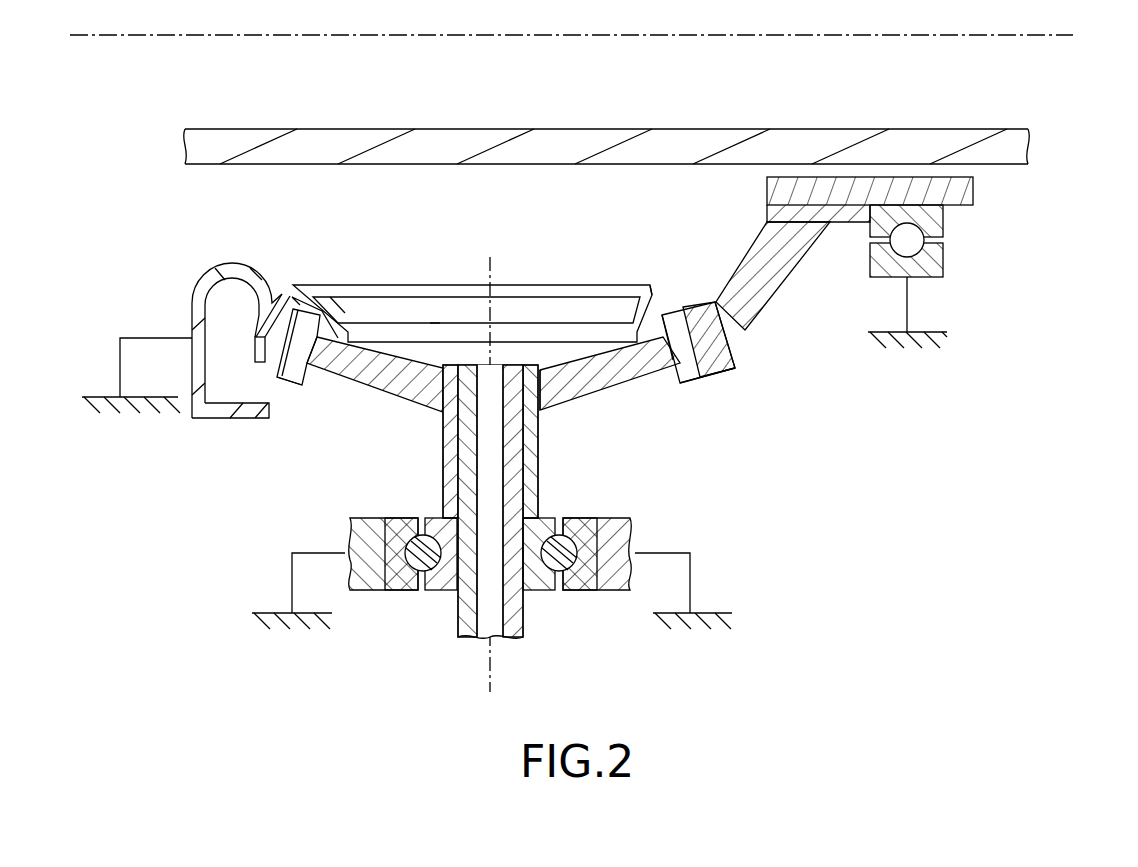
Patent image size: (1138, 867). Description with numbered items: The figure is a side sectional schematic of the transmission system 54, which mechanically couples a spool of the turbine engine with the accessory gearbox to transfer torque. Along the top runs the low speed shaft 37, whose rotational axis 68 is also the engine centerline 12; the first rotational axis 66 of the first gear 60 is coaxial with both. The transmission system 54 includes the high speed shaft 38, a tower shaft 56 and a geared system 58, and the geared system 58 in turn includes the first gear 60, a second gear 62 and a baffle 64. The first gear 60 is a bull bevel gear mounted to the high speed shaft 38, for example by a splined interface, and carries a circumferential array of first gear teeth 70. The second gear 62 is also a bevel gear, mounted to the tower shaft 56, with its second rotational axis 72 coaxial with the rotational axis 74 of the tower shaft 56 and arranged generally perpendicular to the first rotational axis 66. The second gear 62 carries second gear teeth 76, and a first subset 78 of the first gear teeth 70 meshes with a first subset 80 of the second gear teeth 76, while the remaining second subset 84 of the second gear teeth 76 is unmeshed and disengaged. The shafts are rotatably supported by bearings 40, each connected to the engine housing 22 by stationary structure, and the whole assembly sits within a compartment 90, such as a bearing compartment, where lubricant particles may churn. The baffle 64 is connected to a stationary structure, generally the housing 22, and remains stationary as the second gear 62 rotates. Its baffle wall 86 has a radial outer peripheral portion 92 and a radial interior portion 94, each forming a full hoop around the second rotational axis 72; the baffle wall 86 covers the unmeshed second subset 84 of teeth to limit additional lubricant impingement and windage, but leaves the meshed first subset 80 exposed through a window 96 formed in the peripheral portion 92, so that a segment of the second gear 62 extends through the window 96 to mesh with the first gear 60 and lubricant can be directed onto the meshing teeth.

The centerline 12 is at (604, 63).
The first rotational axis 66 is at (604, 63).
The rotational axis of the low speed shaft 68 is at (1032, 36).
The low speed shaft 37 is at (1032, 137).
The high speed shaft 38 is at (975, 193).
The bearings 40 is at (945, 262).
The first gear 60 is at (790, 287).
The second rotational axis 72 is at (472, 282).
The rotational axis of the tower shaft 74 is at (490, 268).
The baffle wall 86 is at (358, 312).
The radial interior portion 94 is at (436, 320).
The window 96 is at (660, 305).
The radial outer peripheral portion 92 is at (205, 267).
The baffle 64 is at (305, 275).
The first gear teeth 70 is at (725, 375).
The first subset of the first gear teeth 78 is at (737, 345).
The second gear teeth 76 is at (695, 386).
The geared system 58 is at (713, 393).
The second subset of the second gear teeth 84 is at (289, 397).
The second gear 62 is at (578, 403).
The first subset of the second gear teeth 80 is at (670, 380).
The transmission system 54 is at (800, 495).
The tower shaft 56 is at (523, 620).
The compartment 90 is at (313, 511).
The engine housing 22 is at (128, 427).